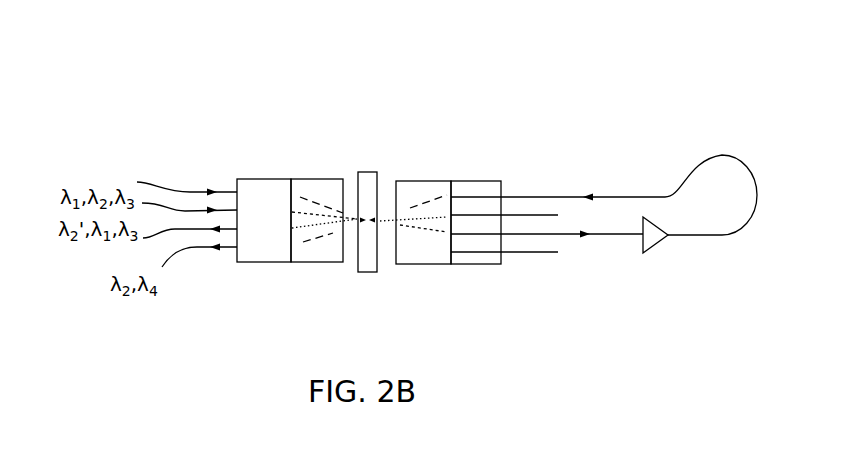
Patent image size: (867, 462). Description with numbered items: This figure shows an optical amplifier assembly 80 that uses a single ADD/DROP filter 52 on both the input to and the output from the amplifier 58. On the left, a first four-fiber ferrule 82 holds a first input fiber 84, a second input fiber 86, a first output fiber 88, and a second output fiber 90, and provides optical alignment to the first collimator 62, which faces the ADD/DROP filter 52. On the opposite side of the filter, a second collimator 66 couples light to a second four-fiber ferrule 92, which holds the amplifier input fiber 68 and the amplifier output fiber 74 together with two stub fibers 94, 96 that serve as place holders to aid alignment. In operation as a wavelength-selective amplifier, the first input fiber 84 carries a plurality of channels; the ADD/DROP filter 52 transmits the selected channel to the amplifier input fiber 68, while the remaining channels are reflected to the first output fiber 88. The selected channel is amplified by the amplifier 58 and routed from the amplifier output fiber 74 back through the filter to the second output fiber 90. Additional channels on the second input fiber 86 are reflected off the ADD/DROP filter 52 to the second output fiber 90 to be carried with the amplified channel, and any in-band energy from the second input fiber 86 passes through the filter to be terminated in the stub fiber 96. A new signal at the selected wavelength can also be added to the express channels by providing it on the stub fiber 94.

The optical amplifier assembly 80 is at (557, 113).
The first four-fiber ferrule 82 is at (267, 263).
The first input fiber 84 is at (167, 178).
The second input fiber 86 is at (160, 173).
The first output fiber 88 is at (158, 238).
The second output fiber 90 is at (166, 268).
The first collimator 62 is at (317, 178).
The ADD/DROP filter 52 is at (368, 170).
The second collimator 66 is at (423, 180).
The second four-fiber ferrule 92 is at (478, 180).
The stub fiber 94 is at (523, 215).
The stub fiber 96 is at (508, 252).
The amplifier input fiber 68 is at (573, 237).
The amplifier output fiber 74 is at (735, 152).
The amplifier 58 is at (655, 247).